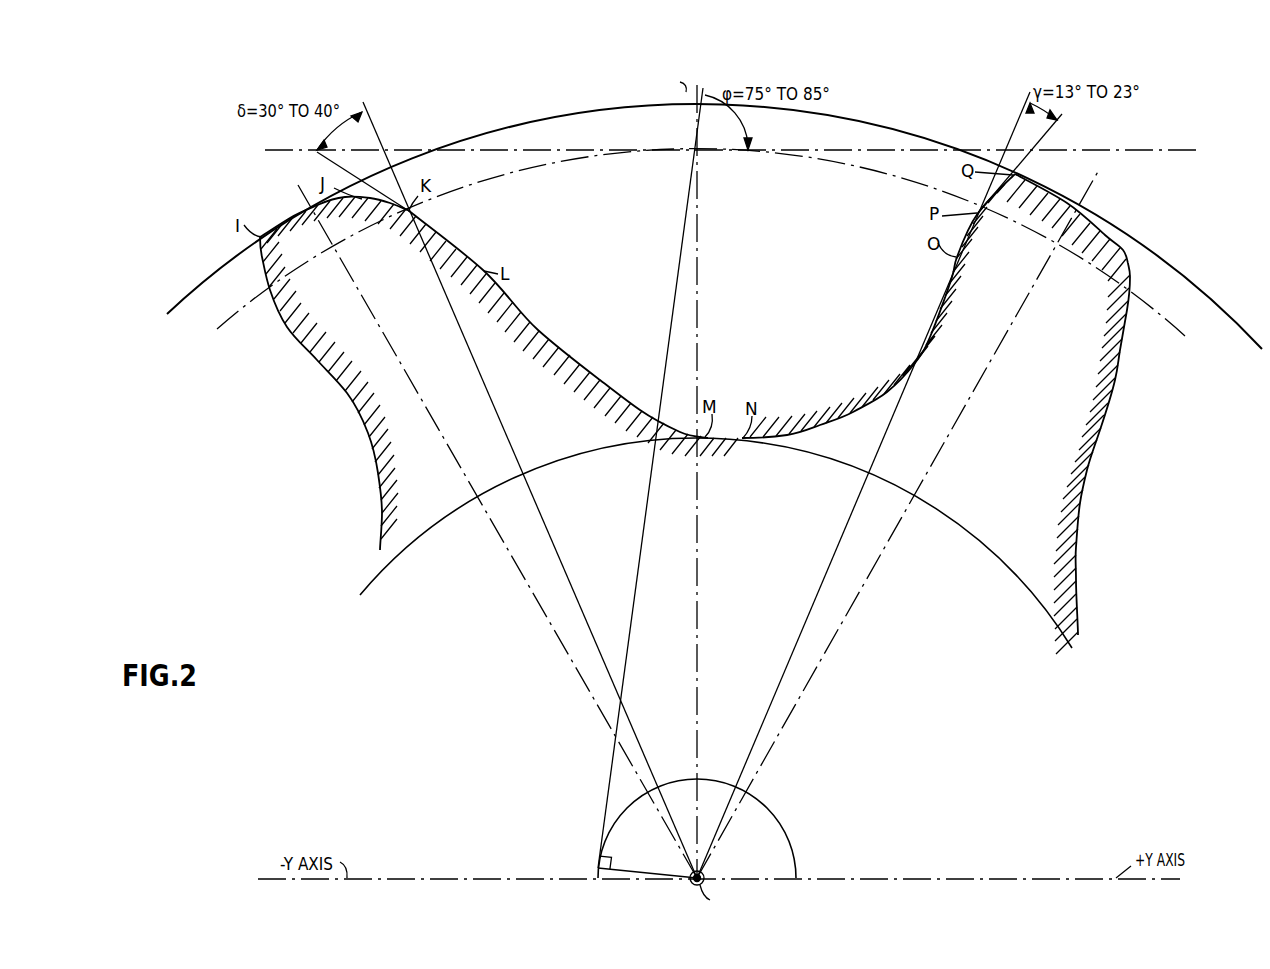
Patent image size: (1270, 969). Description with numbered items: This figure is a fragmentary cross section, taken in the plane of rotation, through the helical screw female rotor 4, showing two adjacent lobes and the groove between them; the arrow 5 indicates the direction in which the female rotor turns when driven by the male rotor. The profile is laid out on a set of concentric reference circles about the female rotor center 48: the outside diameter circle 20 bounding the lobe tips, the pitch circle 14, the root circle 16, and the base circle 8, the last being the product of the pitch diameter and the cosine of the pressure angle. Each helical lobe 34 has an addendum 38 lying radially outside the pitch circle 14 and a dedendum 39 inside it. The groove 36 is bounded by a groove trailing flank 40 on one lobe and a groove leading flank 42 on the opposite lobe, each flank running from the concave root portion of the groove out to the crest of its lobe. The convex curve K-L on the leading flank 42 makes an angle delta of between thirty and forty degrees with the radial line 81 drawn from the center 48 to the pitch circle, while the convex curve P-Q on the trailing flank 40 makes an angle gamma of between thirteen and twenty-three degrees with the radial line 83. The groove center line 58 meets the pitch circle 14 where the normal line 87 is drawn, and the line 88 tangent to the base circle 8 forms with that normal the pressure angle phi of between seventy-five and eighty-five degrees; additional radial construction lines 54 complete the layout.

The outside diameter circle 20 is at (582, 112).
The pitch circle 14 is at (568, 161).
The root circle 16 is at (405, 549).
The base circle 8 is at (791, 841).
The line normal to the pitch circle 87 is at (588, 150).
The female rotor groove center line 58 is at (697, 610).
The radial line 81 is at (585, 613).
The radial line 83 is at (814, 600).
The line tangent to the base circle 88 is at (633, 610).
The radial center lines 54 is at (568, 656).
The female rotor center 48 is at (690, 881).
The groove 36 is at (275, 444).
The helical lobe 34 is at (518, 325).
The groove leading flank 42 is at (584, 363).
The female rotor 4 is at (731, 370).
The groove trailing flank 40 is at (915, 356).
The addendum 38 is at (1078, 170).
The dedendum 39 is at (1080, 403).
The arrow 5 is at (661, 756).